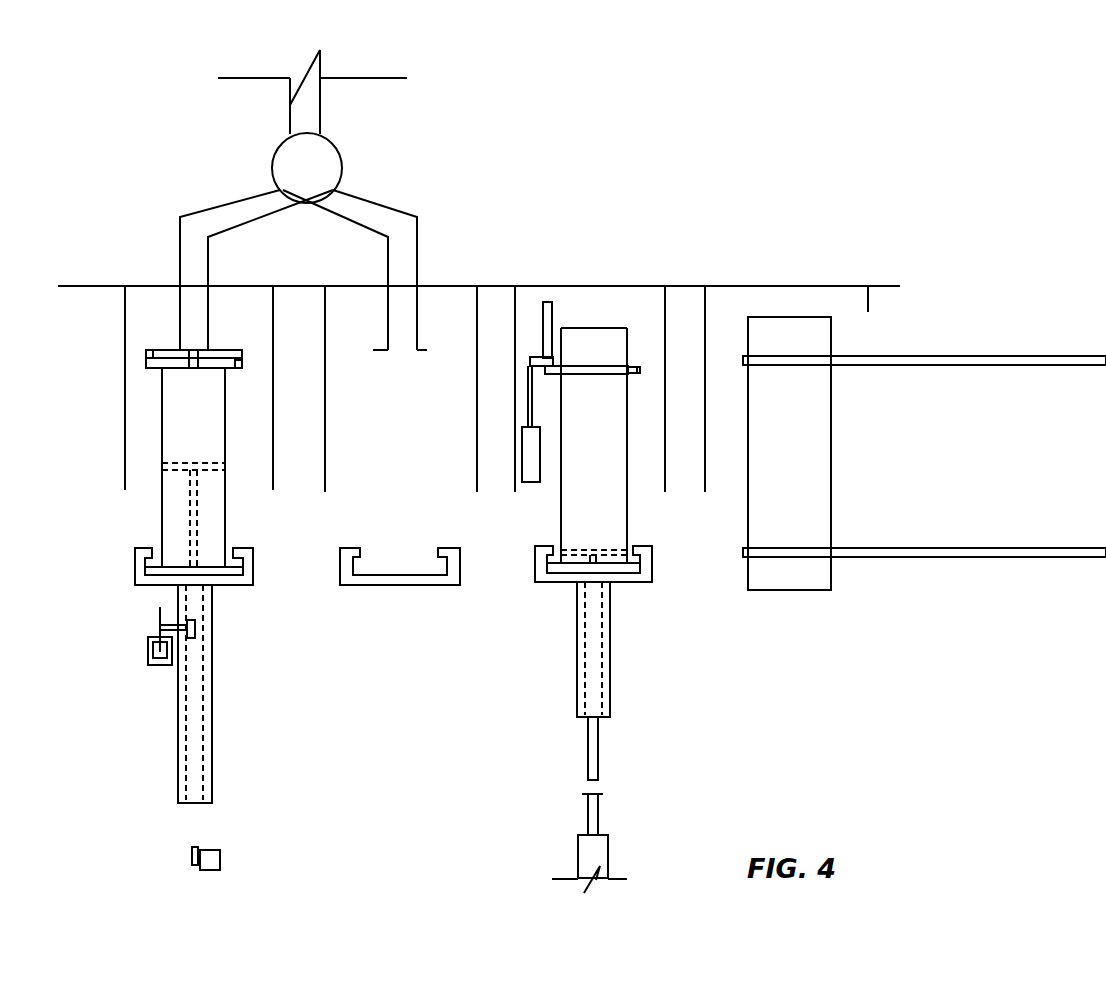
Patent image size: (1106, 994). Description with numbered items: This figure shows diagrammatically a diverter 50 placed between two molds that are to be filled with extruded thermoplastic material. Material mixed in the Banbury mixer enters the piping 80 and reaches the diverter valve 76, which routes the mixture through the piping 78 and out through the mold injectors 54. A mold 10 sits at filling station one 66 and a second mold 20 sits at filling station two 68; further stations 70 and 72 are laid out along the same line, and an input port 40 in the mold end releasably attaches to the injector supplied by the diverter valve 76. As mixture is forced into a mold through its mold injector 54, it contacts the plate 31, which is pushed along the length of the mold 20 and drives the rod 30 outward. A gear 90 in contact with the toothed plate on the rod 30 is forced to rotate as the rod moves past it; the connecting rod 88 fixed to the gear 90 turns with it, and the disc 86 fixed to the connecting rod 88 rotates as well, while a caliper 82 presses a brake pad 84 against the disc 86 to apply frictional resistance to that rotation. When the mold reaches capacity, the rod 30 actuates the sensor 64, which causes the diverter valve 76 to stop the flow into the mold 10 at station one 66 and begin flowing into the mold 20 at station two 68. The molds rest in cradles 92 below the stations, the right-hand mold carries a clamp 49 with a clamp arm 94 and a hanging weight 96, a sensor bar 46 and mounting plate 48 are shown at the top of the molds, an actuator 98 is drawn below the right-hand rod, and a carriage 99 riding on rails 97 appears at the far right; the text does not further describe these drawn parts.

The mold 10 is at (217, 467).
The mold 20 is at (380, 447).
The rod 30 is at (420, 625).
The plate 31 is at (372, 509).
The input port 40 is at (165, 385).
The sensor bar 46 is at (574, 309).
The mounting plate 48 is at (232, 335).
The clamp 49 is at (361, 338).
The diverter 50 is at (758, 110).
The mold injector 54 is at (258, 325).
The sensor 64 is at (234, 848).
The station one 66 is at (194, 374).
The filling station two 68 is at (412, 376).
The third station 70 is at (610, 376).
The fourth station 72 is at (810, 286).
The diverter valve 76 is at (332, 166).
The piping 78 is at (319, 267).
The piping 80 is at (312, 92).
The caliper 82 is at (130, 665).
The brake pad 84 is at (129, 651).
The disc 86 is at (139, 629).
The connecting rod 88 is at (143, 609).
The gear 90 is at (394, 692).
The cradle 92 is at (415, 561).
The clamp arm 94 is at (494, 374).
The weight 96 is at (487, 452).
The rail 97 is at (924, 456).
The actuator 98 is at (603, 843).
The carriage 99 is at (807, 470).